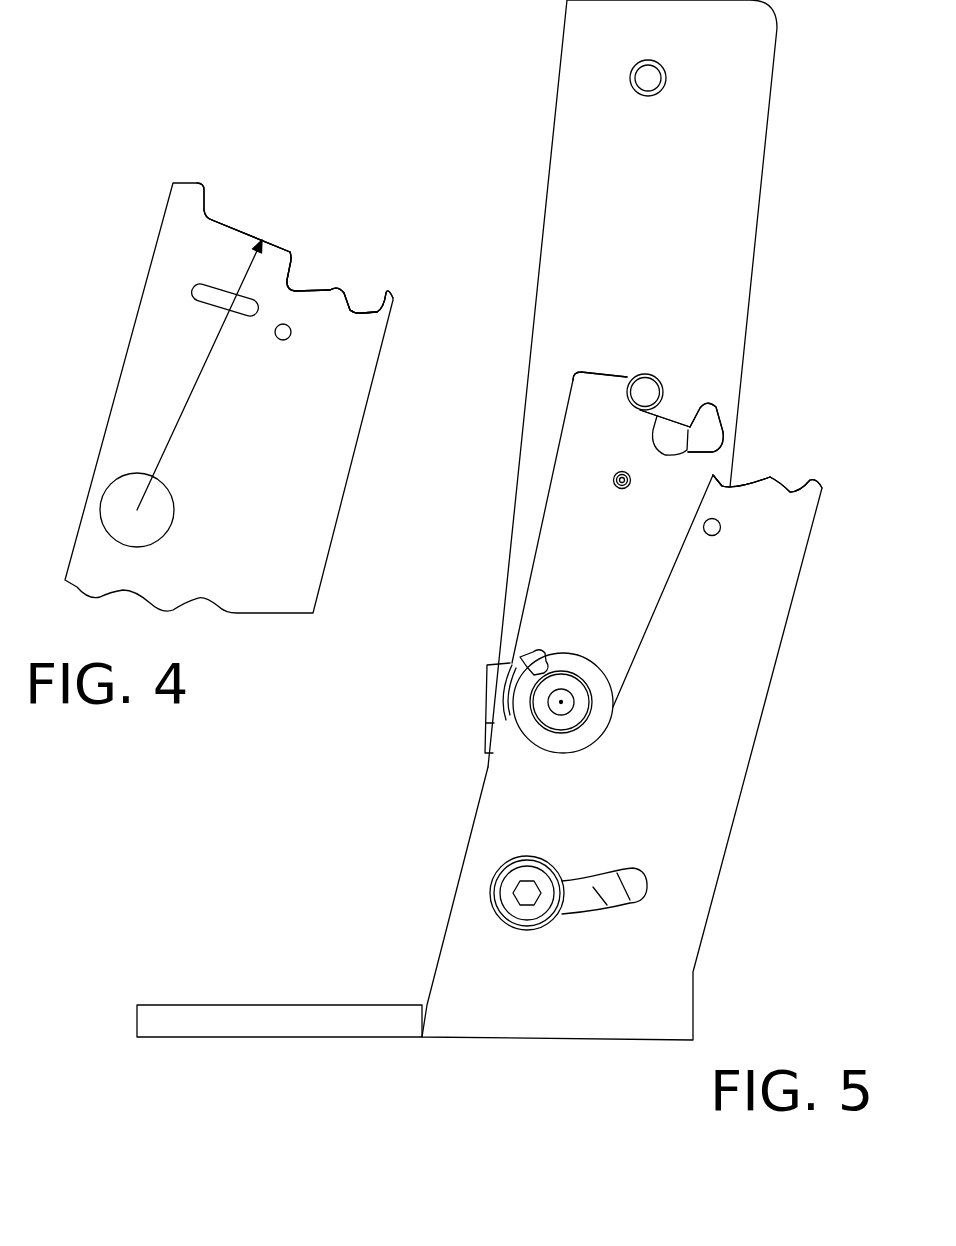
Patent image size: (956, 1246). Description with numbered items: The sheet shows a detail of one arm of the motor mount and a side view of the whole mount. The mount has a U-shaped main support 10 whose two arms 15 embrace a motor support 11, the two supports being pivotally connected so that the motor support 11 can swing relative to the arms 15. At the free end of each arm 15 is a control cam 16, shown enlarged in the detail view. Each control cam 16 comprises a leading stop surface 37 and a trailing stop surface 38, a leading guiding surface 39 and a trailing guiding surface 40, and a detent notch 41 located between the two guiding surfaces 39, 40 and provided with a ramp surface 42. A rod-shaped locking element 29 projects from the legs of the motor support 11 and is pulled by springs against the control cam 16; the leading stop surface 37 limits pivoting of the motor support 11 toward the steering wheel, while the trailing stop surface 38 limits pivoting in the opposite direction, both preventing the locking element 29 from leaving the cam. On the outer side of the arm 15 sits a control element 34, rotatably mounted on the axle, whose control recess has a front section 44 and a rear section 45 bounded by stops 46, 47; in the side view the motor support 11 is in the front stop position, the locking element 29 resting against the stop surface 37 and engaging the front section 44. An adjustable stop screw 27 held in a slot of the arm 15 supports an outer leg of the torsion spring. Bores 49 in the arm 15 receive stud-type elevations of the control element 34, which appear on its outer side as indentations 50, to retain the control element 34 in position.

In FIG. 5, the main support 10 is at (312, 1032).
In FIG. 5, the motor support 11 is at (737, 227).
In FIG. 4, the arms 15 is at (307, 567).
In FIG. 5, the arms 15 is at (718, 852).
In FIG. 4, the control cams 16 is at (268, 224).
In FIG. 5, the control cams 16 is at (772, 475).
In FIG. 5, the adjustable stop screws 27 is at (508, 885).
In FIG. 5, the locking element 29 is at (640, 372).
In FIG. 5, the control element 34 is at (560, 598).
In FIG. 4, the leading stop surface 37 is at (204, 192).
In FIG. 4, the trailing stop surface 38 is at (370, 290).
In FIG. 4, the leading guiding surface 39 is at (227, 220).
In FIG. 4, the trailing guiding surface 40 is at (348, 312).
In FIG. 4, the detent notch 41 is at (290, 270).
In FIG. 5, the detent notch 41 is at (717, 487).
In FIG. 4, the ramp surface 42 is at (327, 277).
In FIG. 5, the front section 44 is at (640, 413).
In FIG. 5, the rear section 45 is at (720, 452).
In FIG. 5, the stop 46 is at (613, 385).
In FIG. 5, the stop 47 is at (713, 418).
In FIG. 5, the bores 49 is at (713, 535).
In FIG. 5, the indentations 50 is at (614, 480).